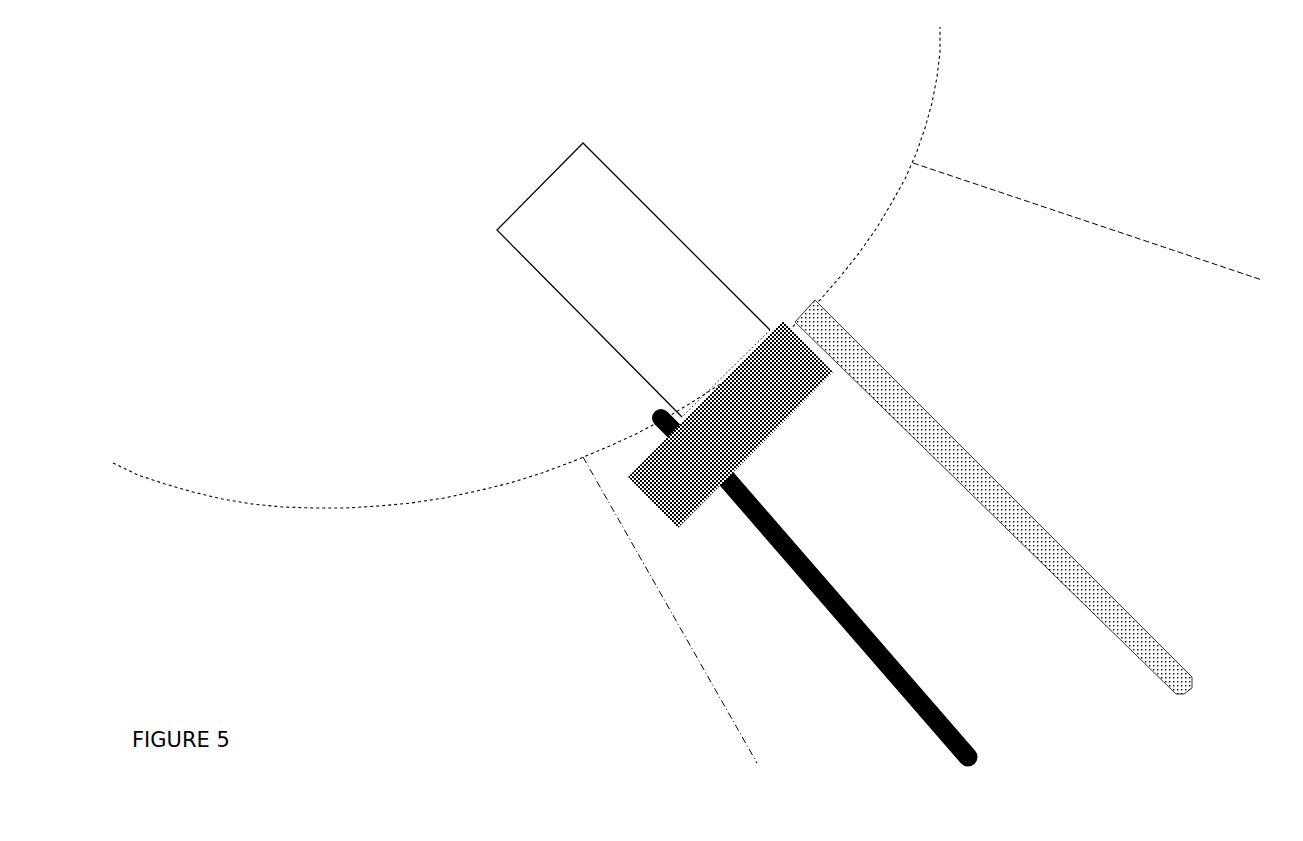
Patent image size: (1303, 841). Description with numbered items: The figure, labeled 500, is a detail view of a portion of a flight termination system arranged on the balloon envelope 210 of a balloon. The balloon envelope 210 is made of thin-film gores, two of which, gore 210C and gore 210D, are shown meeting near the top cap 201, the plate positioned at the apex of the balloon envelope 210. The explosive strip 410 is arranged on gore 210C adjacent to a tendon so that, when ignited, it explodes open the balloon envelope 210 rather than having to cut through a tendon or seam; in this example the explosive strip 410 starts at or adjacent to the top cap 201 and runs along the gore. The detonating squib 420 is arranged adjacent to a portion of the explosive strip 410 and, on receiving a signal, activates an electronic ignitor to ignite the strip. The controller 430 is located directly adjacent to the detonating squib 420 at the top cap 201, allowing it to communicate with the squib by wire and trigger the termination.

The top cap 201 is at (526, 267).
The balloon envelope 210 is at (611, 610).
The gore 210C is at (946, 496).
The gore 210D is at (1087, 188).
The explosive strip 410 is at (858, 617).
The detonating squib 420 is at (648, 437).
The controller 430 is at (690, 250).
The system 500 is at (196, 710).